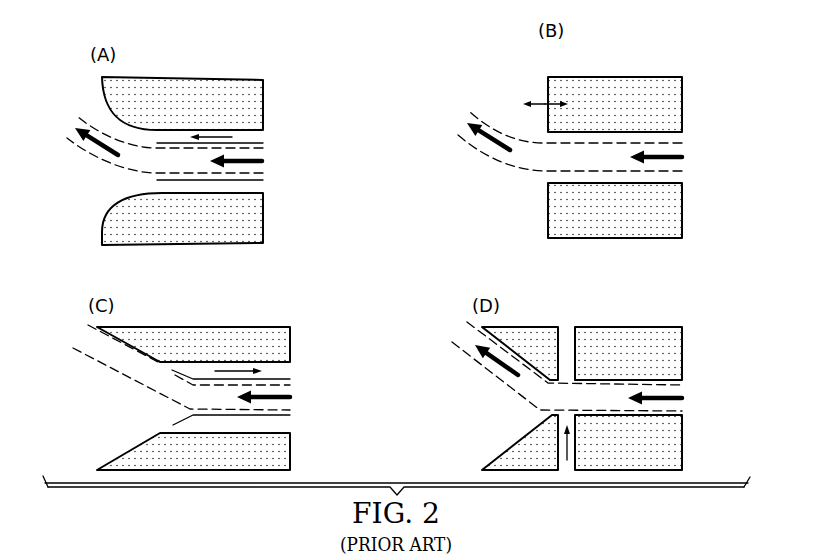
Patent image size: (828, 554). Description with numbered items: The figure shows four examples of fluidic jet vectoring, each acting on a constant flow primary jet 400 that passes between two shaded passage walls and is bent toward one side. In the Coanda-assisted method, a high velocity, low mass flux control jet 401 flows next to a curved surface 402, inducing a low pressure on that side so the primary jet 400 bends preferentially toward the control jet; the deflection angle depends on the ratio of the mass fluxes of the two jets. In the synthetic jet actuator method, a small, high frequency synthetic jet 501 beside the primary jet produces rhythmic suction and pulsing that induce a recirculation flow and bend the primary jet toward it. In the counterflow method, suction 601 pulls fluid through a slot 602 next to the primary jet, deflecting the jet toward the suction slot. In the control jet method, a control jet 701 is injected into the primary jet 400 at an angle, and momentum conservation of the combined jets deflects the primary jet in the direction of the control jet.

The primary jet 400 is at (253, 157).
The control jet 401 is at (212, 137).
The curved surface 402 is at (108, 101).
The synthetic jet 501 is at (537, 104).
The suction 601 is at (232, 371).
The slot 602 is at (162, 376).
The control jet 701 is at (567, 443).